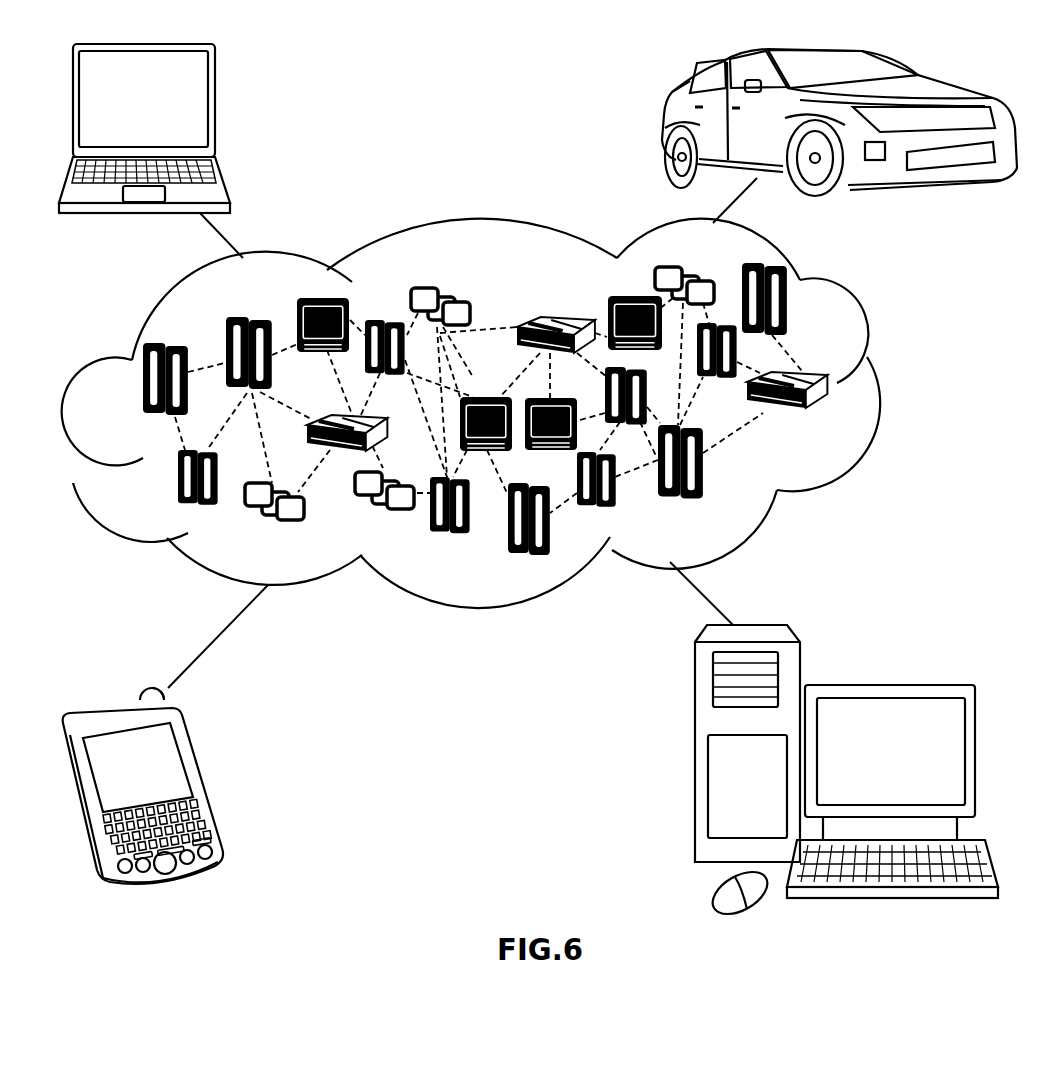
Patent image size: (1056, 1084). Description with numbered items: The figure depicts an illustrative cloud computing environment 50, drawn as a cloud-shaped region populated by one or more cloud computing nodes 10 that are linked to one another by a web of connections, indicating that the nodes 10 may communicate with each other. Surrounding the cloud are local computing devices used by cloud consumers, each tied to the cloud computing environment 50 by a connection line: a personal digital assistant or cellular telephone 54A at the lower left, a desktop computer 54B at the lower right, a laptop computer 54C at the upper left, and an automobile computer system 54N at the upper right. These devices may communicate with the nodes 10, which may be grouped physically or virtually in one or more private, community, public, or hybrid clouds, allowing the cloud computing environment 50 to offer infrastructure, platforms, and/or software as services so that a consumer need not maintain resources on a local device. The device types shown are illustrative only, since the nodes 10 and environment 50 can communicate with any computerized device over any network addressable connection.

The cloud computing nodes 10 is at (827, 418).
The cloud computing environment 50 is at (888, 388).
The personal digital assistant (PDA) or cellular telephone 54A is at (202, 780).
The desktop computer 54B is at (888, 684).
The laptop computer 54C is at (215, 108).
The automobile computer system 54N is at (663, 125).